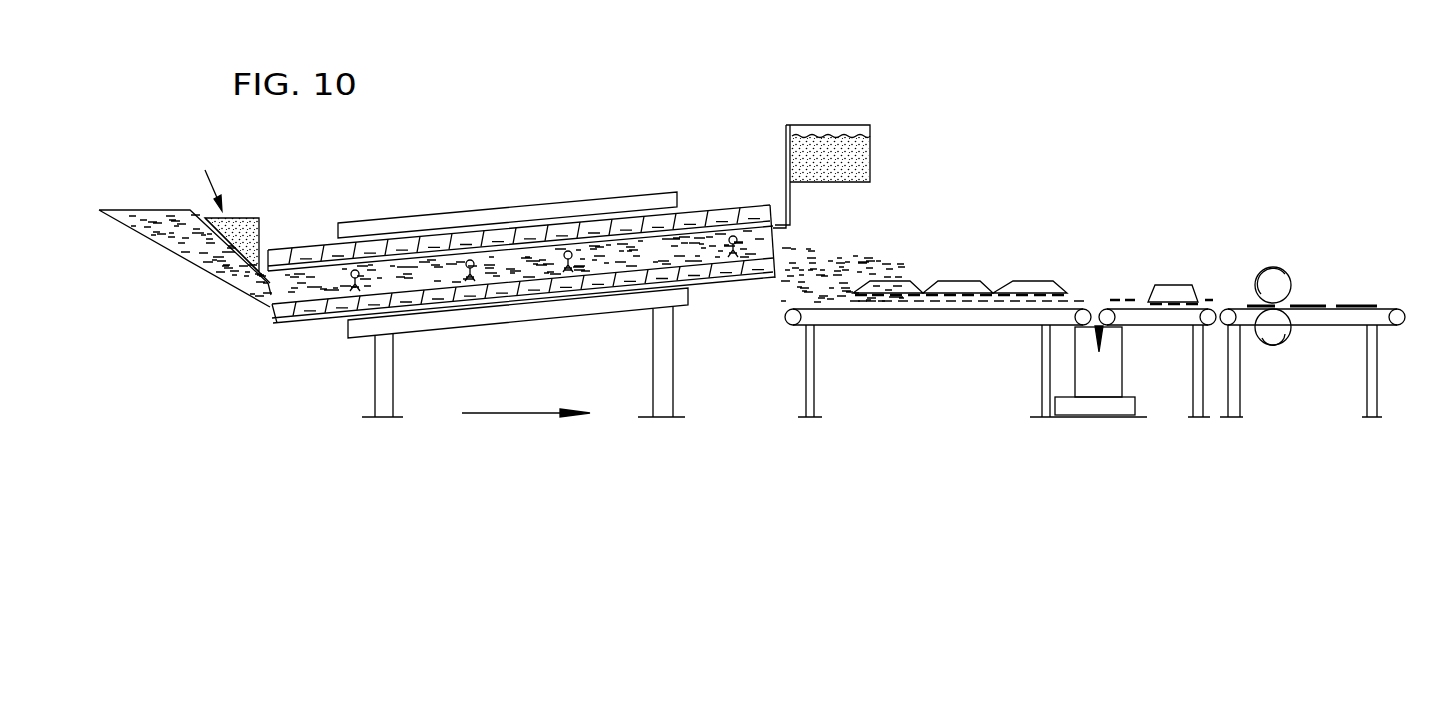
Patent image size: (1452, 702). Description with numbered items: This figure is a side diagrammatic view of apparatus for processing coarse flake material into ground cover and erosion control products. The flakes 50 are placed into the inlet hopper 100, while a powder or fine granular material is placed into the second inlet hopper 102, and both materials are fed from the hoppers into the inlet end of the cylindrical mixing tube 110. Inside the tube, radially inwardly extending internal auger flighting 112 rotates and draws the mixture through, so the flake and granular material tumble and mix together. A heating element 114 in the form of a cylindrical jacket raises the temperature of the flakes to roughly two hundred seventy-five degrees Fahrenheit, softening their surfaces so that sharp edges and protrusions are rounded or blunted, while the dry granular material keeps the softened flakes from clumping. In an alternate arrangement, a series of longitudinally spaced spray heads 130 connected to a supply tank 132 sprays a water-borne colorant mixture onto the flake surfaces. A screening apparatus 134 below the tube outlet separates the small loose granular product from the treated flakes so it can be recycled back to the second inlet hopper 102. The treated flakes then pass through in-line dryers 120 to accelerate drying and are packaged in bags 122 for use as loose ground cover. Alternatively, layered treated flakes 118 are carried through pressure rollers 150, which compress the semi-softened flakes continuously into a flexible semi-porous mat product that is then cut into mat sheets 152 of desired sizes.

The flakes 50 is at (150, 198).
The inlet hopper 100 is at (187, 262).
The second inlet hopper 102 is at (246, 218).
The cylindrical mixing tube 110 is at (293, 322).
The internal auger flighting 112 is at (330, 308).
The heating element 114 is at (493, 214).
The treated flakes 118 is at (927, 299).
The in-line dryers 120 is at (1016, 280).
The bags 122 is at (1102, 373).
The spray heads 130 is at (466, 261).
The supply tank 132 is at (870, 152).
The screening apparatus 134 is at (770, 285).
The pressure rollers 150 is at (1273, 267).
The mat sheets 152 is at (1350, 306).